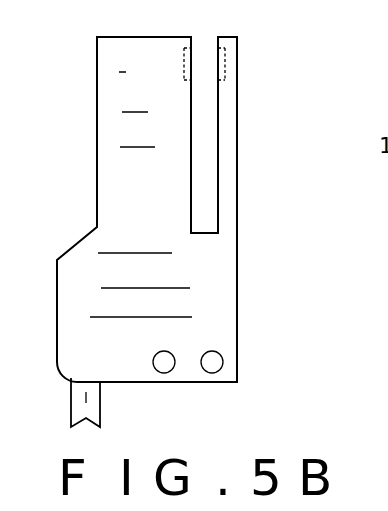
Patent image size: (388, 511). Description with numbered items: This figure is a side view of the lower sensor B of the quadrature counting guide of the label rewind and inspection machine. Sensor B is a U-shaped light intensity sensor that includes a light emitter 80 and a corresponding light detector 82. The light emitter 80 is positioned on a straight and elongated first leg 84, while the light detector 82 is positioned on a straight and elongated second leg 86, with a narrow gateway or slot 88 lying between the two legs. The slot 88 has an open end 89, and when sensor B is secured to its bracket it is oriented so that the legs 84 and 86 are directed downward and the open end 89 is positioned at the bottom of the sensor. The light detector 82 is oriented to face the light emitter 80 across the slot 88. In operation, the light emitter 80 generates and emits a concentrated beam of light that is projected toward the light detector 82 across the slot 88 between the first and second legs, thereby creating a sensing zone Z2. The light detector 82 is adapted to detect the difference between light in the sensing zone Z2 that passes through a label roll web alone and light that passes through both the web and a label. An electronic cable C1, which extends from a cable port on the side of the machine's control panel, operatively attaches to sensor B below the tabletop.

The light emitter 80 is at (184, 68).
The light detector 82 is at (225, 60).
The first leg 84 is at (112, 175).
The second leg 86 is at (228, 192).
The slot 88 is at (201, 158).
The open end 89 is at (203, 44).
The sensing zone Z2 is at (206, 66).
The sensor B is at (50, 247).
The electronic cable C1 is at (89, 398).